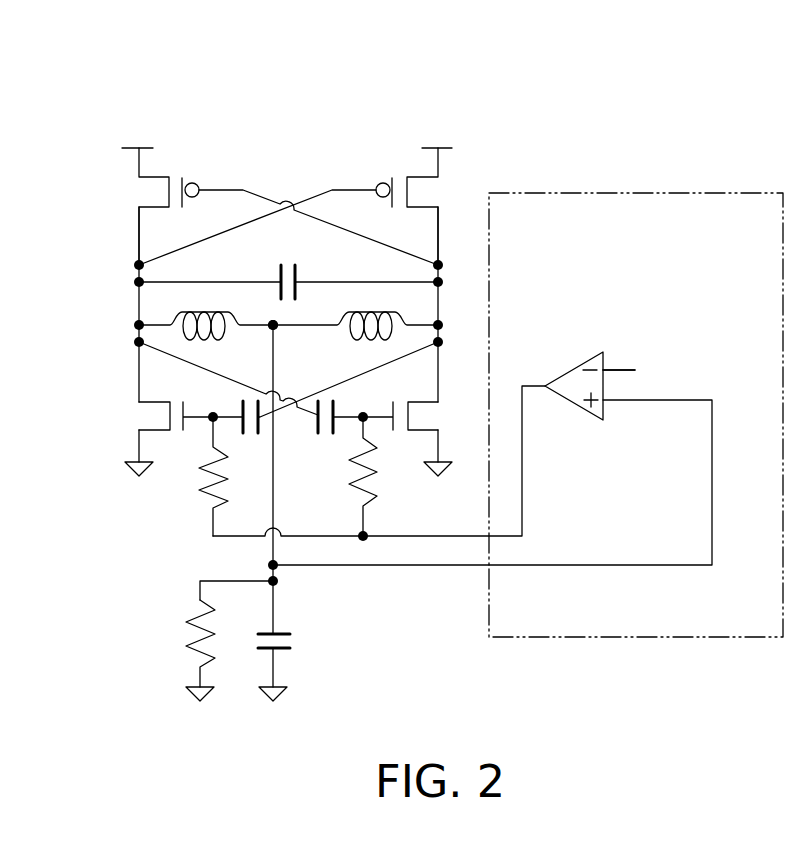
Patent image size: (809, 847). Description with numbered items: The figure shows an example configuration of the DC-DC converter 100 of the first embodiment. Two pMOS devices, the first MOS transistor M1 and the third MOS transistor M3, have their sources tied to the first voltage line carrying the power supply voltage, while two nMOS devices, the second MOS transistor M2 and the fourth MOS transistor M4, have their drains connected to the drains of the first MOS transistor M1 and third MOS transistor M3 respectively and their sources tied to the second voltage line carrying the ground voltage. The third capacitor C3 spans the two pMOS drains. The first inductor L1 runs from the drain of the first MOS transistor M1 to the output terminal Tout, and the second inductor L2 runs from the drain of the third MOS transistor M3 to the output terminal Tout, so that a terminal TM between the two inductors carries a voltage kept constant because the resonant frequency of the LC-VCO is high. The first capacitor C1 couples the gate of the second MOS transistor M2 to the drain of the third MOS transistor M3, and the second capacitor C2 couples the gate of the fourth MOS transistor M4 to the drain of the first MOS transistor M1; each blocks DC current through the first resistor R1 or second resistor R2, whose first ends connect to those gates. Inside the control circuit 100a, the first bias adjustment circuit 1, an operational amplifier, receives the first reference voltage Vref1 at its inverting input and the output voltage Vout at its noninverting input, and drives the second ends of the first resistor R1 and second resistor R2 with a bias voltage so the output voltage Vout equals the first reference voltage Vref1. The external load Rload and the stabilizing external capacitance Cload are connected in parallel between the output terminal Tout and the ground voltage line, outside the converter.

The DC-DC converter 100 is at (96, 87).
The control circuit 100a is at (636, 193).
The first bias adjustment circuit 1 is at (577, 367).
The first MOS transistor M1 is at (163, 177).
The second MOS transistor M2 is at (152, 402).
The third MOS transistor M3 is at (418, 177).
The fourth MOS transistor M4 is at (418, 402).
The first capacitor C1 is at (246, 432).
The second capacitor C2 is at (336, 404).
The third capacitor C3 is at (281, 277).
The first inductor L1 is at (168, 322).
The second inductor L2 is at (408, 322).
The first resistor R1 is at (210, 466).
The second resistor R2 is at (352, 462).
The terminal TM is at (275, 329).
The output terminal Tout is at (273, 565).
The output voltage Vout is at (276, 582).
The external load Rload is at (190, 620).
The external capacitance Cload is at (290, 634).
The first reference voltage Vref1 is at (654, 373).